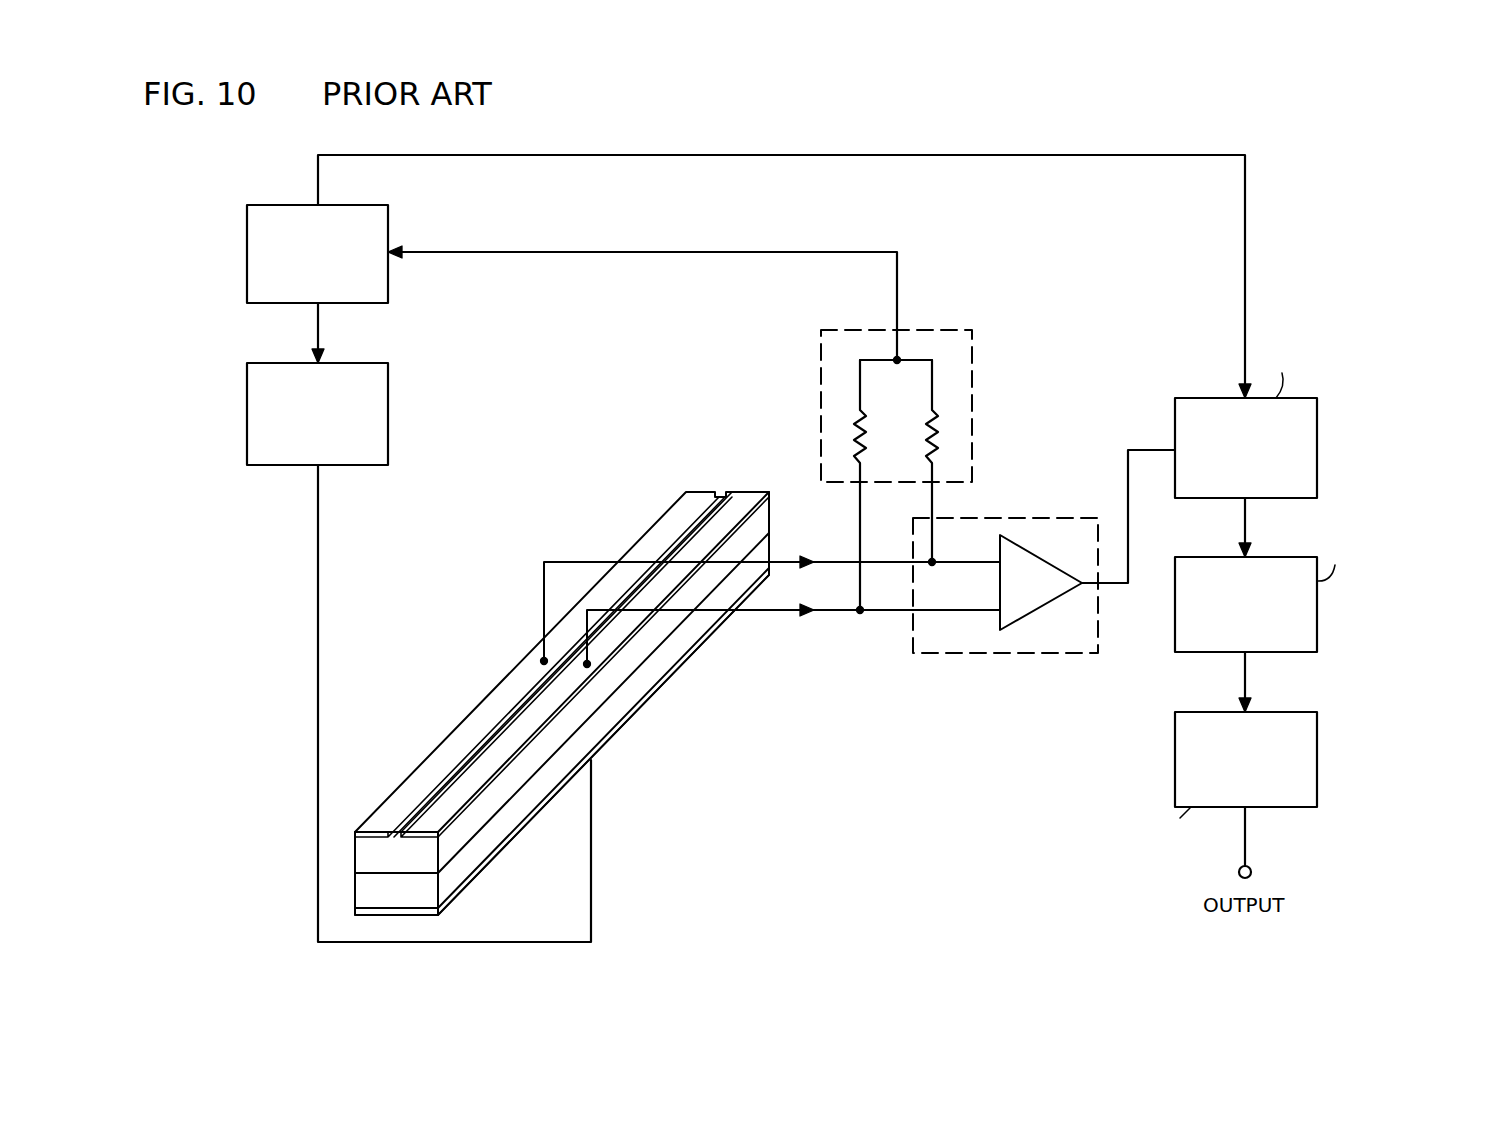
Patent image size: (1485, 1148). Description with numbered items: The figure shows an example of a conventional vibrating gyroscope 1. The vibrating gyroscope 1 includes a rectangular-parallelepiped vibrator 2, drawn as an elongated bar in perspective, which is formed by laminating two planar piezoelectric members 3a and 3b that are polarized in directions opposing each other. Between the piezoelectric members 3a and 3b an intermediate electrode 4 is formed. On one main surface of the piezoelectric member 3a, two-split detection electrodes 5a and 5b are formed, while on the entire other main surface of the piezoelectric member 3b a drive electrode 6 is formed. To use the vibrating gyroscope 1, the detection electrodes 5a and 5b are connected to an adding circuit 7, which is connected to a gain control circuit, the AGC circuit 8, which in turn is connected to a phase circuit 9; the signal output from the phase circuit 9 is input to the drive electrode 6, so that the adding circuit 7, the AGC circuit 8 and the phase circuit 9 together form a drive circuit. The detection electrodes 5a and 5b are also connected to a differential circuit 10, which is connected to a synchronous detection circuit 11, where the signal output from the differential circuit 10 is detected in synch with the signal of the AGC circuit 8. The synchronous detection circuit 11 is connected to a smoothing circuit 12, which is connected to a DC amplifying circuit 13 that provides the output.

The vibrating gyroscope 1 is at (613, 476).
The vibrator 2 is at (773, 518).
The piezoelectric member 3a is at (625, 666).
The piezoelectric member 3b is at (625, 700).
The intermediate electrode 4 is at (683, 630).
The detection electrode 5a is at (502, 696).
The detection electrode 5b is at (506, 747).
The drive electrode 6 is at (606, 745).
The adding circuit 7 is at (972, 357).
The AGC circuit 8 is at (247, 253).
The phase circuit 9 is at (247, 414).
The differential circuit 10 is at (925, 653).
The synchronous detection circuit 11 is at (1317, 456).
The smoothing circuit 12 is at (1317, 613).
The DC amplifying circuit 13 is at (1317, 756).